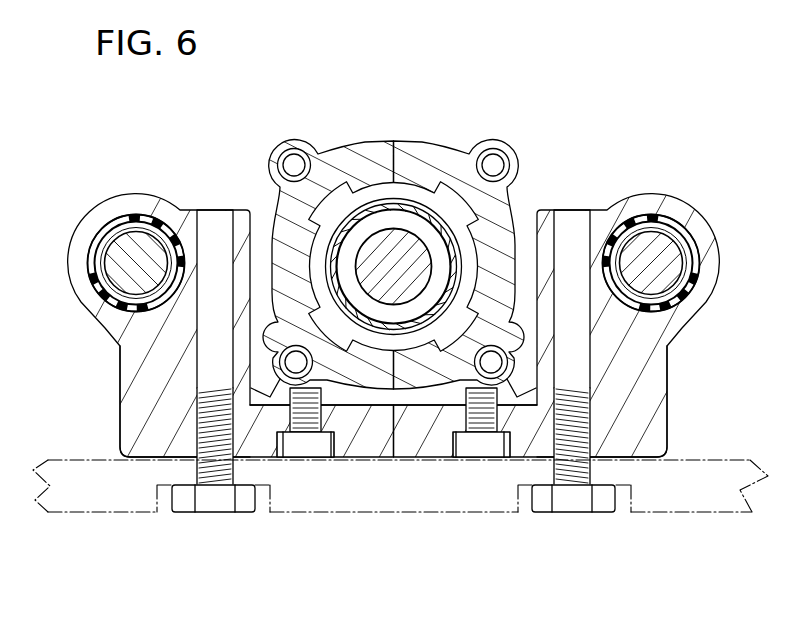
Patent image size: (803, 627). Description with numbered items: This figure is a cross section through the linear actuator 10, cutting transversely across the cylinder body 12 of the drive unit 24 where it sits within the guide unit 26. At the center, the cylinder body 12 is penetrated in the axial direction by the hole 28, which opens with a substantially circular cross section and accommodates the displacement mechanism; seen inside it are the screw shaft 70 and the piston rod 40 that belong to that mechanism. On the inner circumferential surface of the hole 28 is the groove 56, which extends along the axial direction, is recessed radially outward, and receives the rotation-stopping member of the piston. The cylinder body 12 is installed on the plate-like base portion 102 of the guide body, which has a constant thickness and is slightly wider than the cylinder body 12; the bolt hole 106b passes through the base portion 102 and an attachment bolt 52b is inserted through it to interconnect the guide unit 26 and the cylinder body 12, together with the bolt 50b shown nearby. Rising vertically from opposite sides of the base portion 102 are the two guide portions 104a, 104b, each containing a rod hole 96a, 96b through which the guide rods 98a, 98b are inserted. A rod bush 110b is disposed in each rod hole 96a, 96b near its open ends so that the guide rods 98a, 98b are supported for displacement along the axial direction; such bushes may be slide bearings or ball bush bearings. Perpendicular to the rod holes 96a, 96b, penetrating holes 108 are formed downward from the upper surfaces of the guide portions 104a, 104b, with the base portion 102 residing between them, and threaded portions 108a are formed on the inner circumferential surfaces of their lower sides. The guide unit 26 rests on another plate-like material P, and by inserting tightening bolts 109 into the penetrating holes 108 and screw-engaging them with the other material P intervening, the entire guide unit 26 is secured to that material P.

The linear actuator 10 is at (694, 97).
The cylinder body 12 is at (357, 148).
The drive unit 24 is at (454, 134).
The guide unit 26 is at (707, 196).
The hole 28 is at (375, 335).
The piston rod 40 is at (410, 205).
The mounting bolt 50b is at (302, 395).
The attachment bolt 52b is at (272, 455).
The groove 56 is at (330, 207).
The screw shaft 70 is at (385, 283).
The rod hole 96a is at (118, 252).
The rod hole 96b is at (670, 253).
The guide rod 98a is at (140, 248).
The guide rod 98b is at (648, 250).
The base portion 102 is at (403, 440).
The guide portion 104a is at (132, 371).
The guide portion 104b is at (655, 370).
The bolt hole 106b is at (322, 440).
The penetrating hole 108 is at (220, 222).
The threaded portion 108a is at (212, 475).
The tightening bolt 109 is at (242, 497).
The rod bush 110b is at (97, 285).
The other material P is at (734, 455).